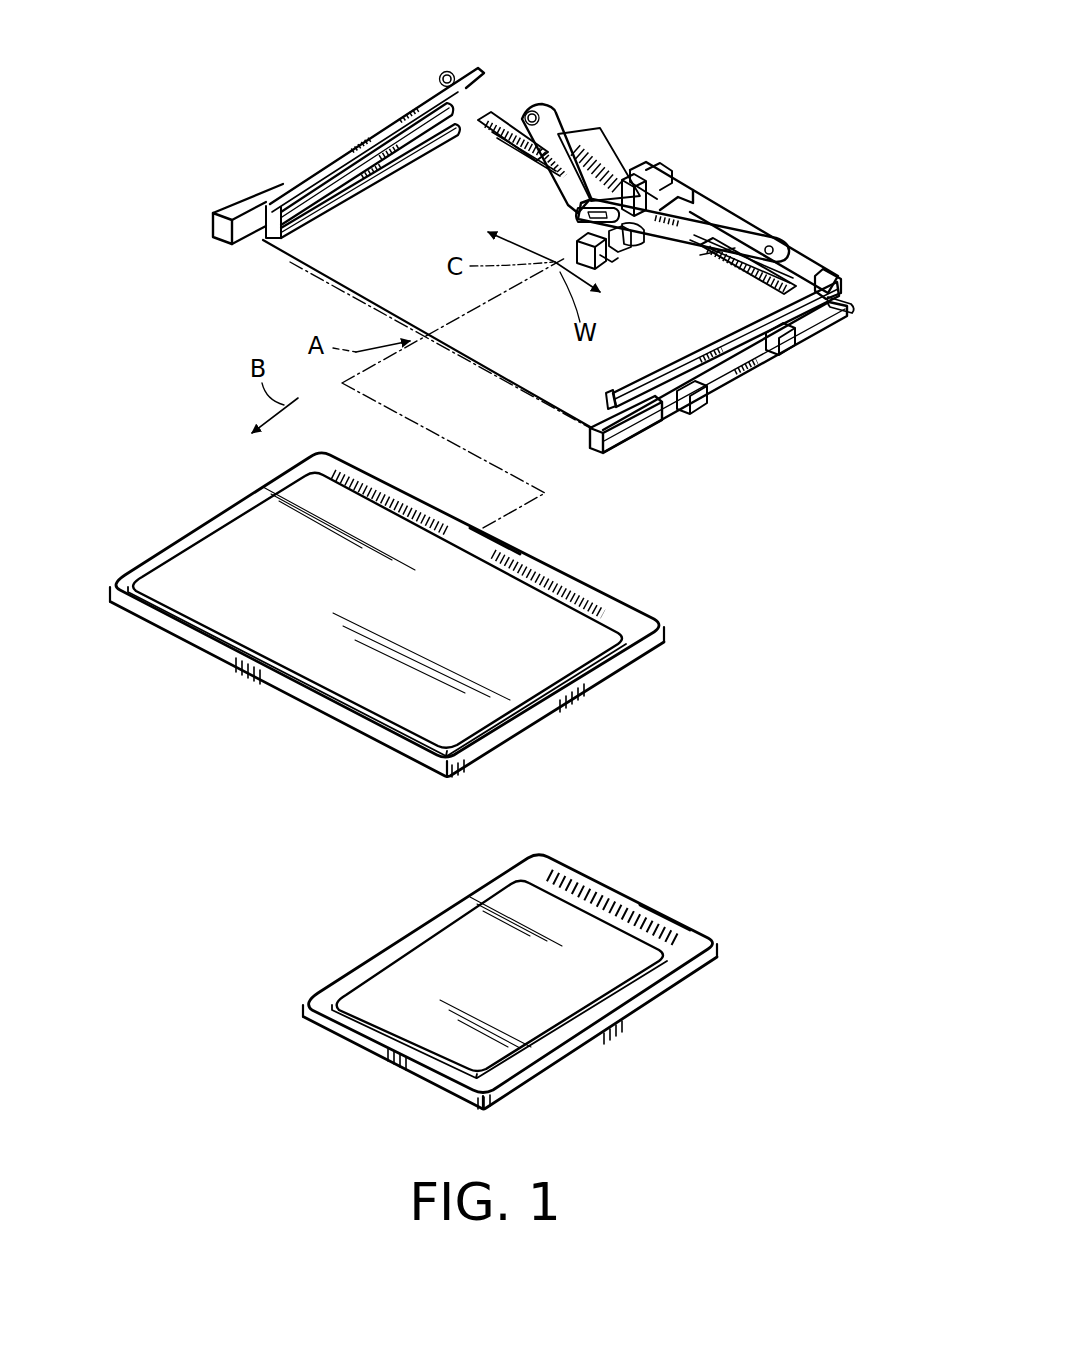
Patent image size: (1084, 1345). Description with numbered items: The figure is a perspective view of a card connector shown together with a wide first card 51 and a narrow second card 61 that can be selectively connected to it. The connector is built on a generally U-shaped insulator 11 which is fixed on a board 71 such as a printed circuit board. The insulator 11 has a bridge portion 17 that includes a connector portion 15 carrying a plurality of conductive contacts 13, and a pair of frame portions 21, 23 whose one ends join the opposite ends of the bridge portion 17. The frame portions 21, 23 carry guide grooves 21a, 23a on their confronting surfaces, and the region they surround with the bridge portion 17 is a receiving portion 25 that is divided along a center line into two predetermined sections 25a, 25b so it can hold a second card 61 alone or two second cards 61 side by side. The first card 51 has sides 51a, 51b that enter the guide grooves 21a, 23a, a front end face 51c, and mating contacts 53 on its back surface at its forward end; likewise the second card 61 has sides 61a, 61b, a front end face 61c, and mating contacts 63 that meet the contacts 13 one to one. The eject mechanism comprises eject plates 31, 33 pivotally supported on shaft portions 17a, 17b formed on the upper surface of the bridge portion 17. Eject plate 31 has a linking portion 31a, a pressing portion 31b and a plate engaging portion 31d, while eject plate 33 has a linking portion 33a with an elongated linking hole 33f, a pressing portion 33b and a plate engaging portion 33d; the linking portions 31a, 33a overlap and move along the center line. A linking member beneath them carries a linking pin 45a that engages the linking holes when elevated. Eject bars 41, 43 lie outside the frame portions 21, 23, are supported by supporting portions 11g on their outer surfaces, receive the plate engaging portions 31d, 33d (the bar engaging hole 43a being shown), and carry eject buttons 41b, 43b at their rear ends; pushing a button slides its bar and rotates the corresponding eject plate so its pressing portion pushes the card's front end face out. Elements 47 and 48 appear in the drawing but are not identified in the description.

The insulator 11 is at (674, 180).
The supporting portions 11g is at (786, 353).
The contacts 13 is at (503, 140).
The connector portion 15 is at (522, 164).
The bridge portion 17 is at (731, 238).
The shaft portion 17a is at (535, 110).
The shaft portion 17b is at (775, 250).
The frame portion 21 is at (386, 152).
The guide groove 21a is at (405, 152).
The frame portion 23 is at (684, 354).
The guide groove 23a is at (608, 400).
The receiving portion 25 is at (475, 355).
The predetermined section 25a is at (407, 238).
The predetermined section 25b is at (504, 335).
The eject plate 31 is at (548, 130).
The linking portion 31a is at (592, 180).
The pressing portion 31b is at (574, 215).
The plate engaging portion 31d is at (447, 72).
The eject plate 33 is at (762, 233).
The linking portion 33a is at (612, 186).
The pressing portion 33b is at (634, 243).
The plate engaging portion 33d is at (849, 310).
The linking hole 33f is at (654, 173).
The eject bar 41 is at (341, 160).
The eject button 41b is at (262, 193).
The eject bar 43 is at (736, 376).
The bar engaging hole 43a is at (848, 283).
The eject button 43b is at (632, 435).
The linking pin 45a is at (604, 250).
The block 47 is at (576, 251).
The slider 48 is at (616, 265).
The first card 51 is at (284, 694).
The side 51a is at (236, 514).
The side 51b is at (541, 701).
The front end face 51c is at (522, 550).
The mating contacts 53 is at (383, 478).
The second card 61 is at (360, 1054).
The side 61a is at (446, 917).
The side 61b is at (579, 1041).
The front end face 61c is at (682, 918).
The mating contacts 63 is at (622, 892).
The board 71 is at (305, 252).